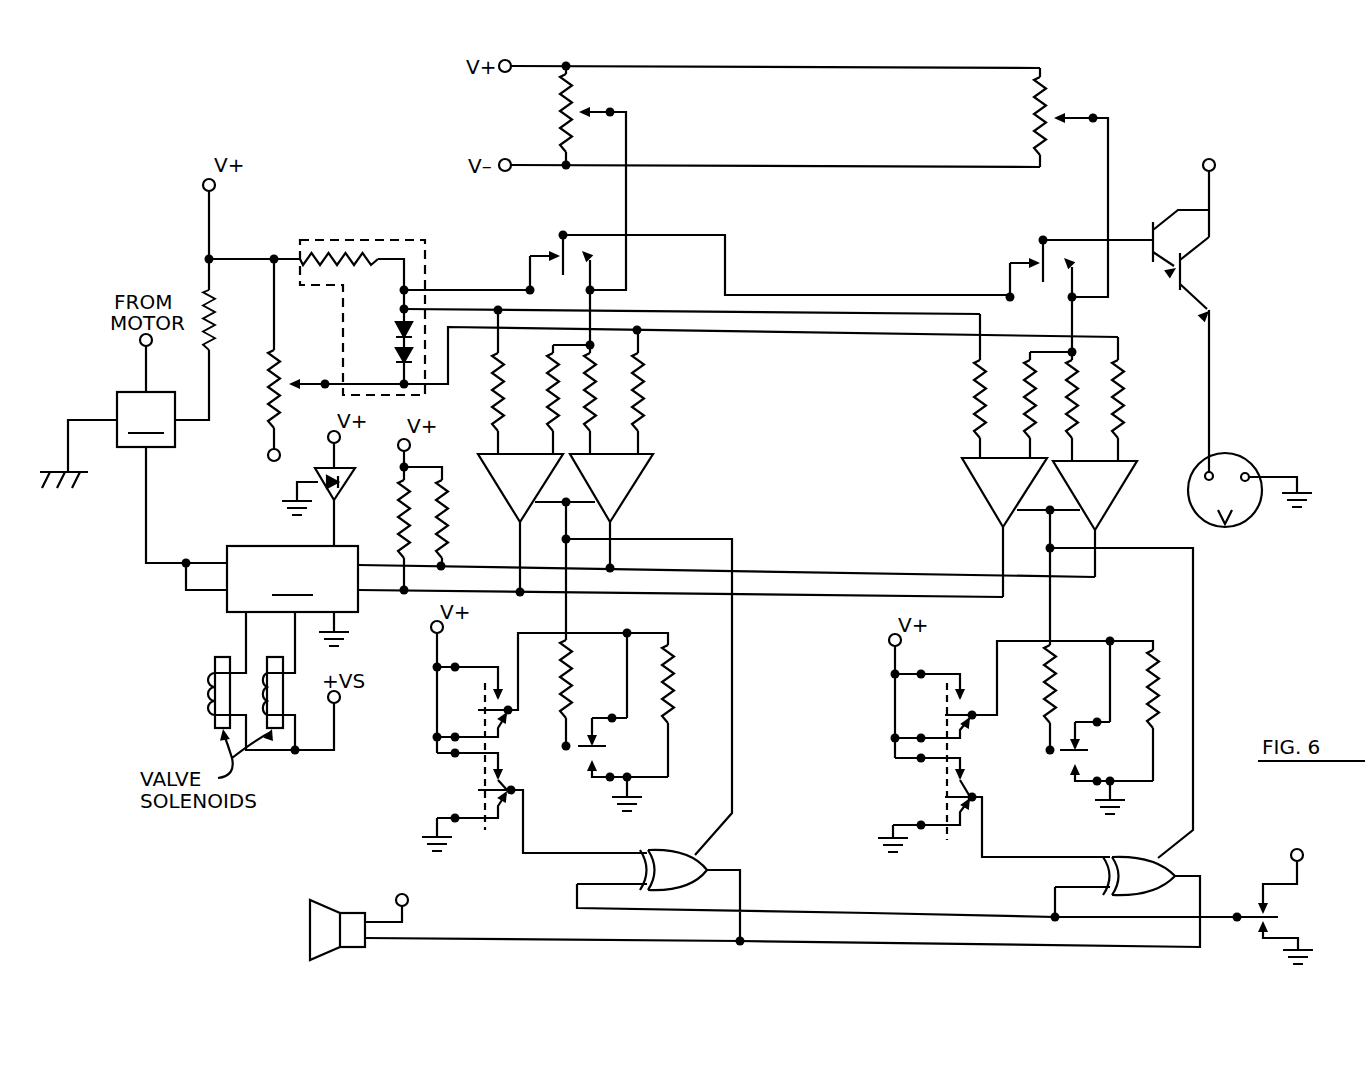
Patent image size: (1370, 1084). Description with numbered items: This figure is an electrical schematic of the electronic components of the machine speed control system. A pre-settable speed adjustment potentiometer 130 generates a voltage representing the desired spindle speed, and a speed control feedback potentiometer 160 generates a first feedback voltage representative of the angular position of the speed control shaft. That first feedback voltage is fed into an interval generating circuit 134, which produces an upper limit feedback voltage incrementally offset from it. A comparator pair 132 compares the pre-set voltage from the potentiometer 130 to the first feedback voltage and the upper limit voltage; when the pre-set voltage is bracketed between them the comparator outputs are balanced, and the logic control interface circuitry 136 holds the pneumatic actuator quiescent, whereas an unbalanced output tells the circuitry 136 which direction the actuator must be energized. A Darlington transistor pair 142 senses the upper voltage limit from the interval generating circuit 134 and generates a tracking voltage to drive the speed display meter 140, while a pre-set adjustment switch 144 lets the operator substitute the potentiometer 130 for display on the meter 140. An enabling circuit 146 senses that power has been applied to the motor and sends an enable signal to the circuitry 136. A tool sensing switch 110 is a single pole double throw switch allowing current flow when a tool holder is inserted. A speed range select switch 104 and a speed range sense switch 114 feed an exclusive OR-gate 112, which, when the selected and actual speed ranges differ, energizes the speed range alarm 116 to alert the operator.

The speed range select switch 104 is at (503, 785).
The tool sensing switch 110 is at (579, 755).
The exclusive OR-gate 112 is at (680, 850).
The speed range sense switch 114 is at (1272, 915).
The speed range alarm 116 is at (314, 930).
The pre-settable speed adjustment potentiometer 130 is at (556, 118).
The comparator pair 132 is at (538, 471).
The interval generating circuit 134 is at (343, 240).
The logic control interface circuitry 136 is at (292, 579).
The speed display meter 140 is at (1263, 510).
The Darlington transistor pair 142 is at (1166, 278).
The pre-set adjustment switch 144 is at (555, 249).
The enabling circuit 146 is at (146, 419).
The speed control feedback potentiometer 160 is at (268, 358).